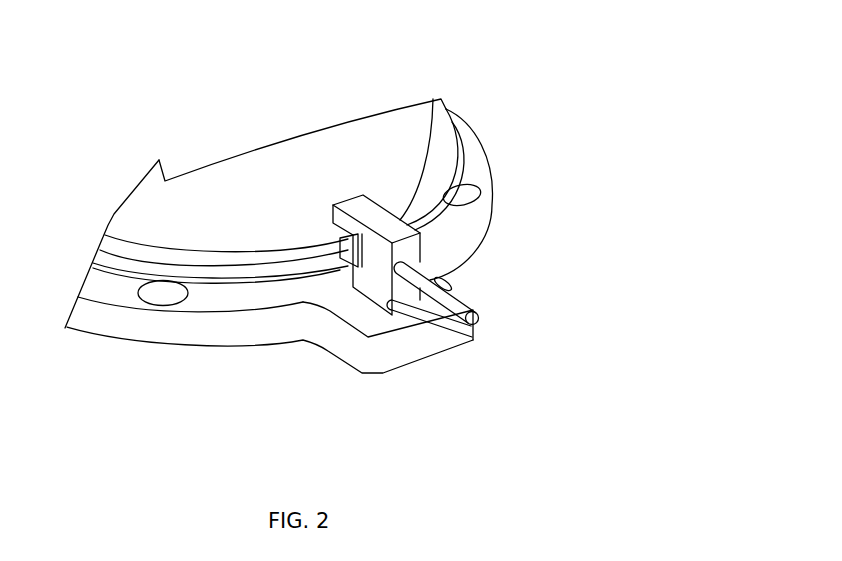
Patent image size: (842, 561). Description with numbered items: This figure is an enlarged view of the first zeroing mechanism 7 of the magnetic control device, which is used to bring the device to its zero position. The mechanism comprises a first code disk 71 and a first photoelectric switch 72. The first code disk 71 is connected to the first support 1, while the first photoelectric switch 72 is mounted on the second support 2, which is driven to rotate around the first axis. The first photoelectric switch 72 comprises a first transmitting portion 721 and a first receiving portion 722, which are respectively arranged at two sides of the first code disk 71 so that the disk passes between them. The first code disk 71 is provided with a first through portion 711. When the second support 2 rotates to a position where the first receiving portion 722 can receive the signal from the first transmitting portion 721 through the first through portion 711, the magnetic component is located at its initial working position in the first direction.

The first support 1 is at (377, 130).
The second support 2 is at (479, 174).
The first zeroing mechanism 7 is at (311, 395).
The first code disk 71 is at (240, 270).
The first through portion 711 is at (332, 260).
The first photoelectric switch 72 is at (429, 316).
The first transmitting portion 721 is at (368, 215).
The first receiving portion 722 is at (350, 278).